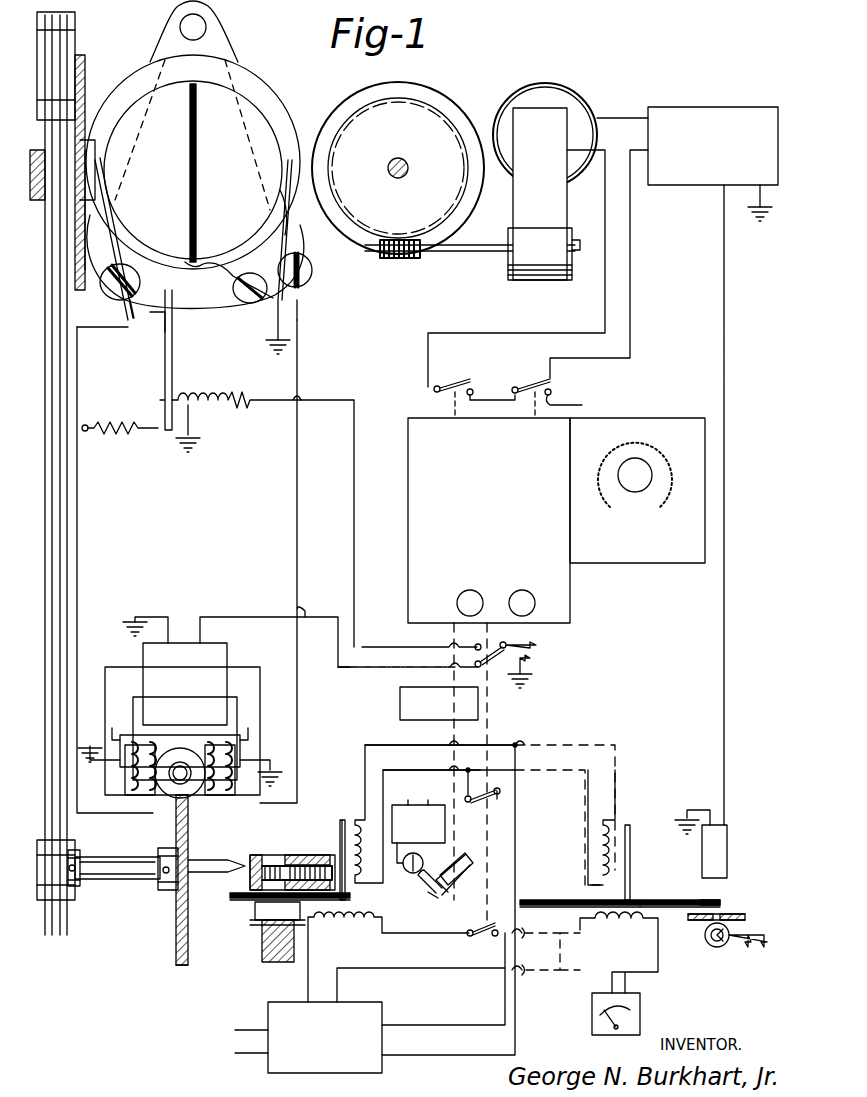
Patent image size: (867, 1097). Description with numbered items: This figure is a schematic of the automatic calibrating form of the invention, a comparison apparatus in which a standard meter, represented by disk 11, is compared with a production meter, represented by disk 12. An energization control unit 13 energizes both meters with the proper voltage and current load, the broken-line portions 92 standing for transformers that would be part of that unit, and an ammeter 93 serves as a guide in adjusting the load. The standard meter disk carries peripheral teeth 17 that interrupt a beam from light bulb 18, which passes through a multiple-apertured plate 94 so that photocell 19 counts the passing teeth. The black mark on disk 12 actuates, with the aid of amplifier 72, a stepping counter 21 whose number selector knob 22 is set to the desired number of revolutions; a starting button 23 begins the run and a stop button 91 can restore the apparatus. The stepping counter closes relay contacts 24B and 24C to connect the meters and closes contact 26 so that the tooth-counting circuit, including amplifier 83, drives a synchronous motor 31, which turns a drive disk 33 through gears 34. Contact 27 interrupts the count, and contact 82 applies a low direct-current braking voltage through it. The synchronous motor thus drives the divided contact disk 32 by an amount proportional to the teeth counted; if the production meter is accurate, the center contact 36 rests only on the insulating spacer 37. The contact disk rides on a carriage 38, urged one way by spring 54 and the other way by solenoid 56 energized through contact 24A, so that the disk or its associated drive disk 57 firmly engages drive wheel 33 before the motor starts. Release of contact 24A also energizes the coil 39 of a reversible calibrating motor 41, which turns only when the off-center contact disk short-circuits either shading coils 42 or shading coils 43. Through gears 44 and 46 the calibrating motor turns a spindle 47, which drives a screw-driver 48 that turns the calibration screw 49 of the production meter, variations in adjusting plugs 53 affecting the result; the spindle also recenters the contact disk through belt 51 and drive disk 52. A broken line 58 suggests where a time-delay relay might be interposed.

The belt 51 is at (46, 480).
The drive disk 52 is at (85, 82).
The drive disk 57 is at (265, 82).
The divided contact disk 32 is at (269, 120).
The insulating spacer 37 is at (196, 152).
The center contact 36 is at (232, 292).
The carriage 38 is at (302, 274).
The drive disk 33 is at (430, 88).
The gears 34 is at (395, 258).
The synchronous motor 31 is at (572, 112).
The amplifier 83 is at (742, 108).
The solenoid 56 is at (216, 386).
The spring 54 is at (130, 440).
The coil 39 is at (185, 643).
The calibrating motor 41 is at (231, 666).
The shading coils 42 is at (232, 760).
The shading coils 43 is at (128, 736).
The gears 44 is at (188, 798).
The gears 46 is at (188, 836).
The spindle 47 is at (106, 882).
The screw-driver 48 is at (191, 886).
The calibration screw 49 is at (246, 864).
The adjusting plugs 53 is at (336, 846).
The production meter disk 12 is at (374, 900).
The energization control unit 13 is at (380, 1072).
The relay contact 24C is at (465, 944).
The amplifier 72 is at (396, 720).
The broken line 58 is at (375, 677).
The relay contact 24A is at (491, 660).
The relay contact 24B is at (458, 810).
The broken-line portions 92 is at (563, 746).
The standard meter disk 11 is at (578, 898).
The peripheral teeth 17 is at (726, 904).
The multiple-apertured plate 94 is at (744, 914).
The light bulb 18 is at (710, 942).
The photocell 19 is at (728, 858).
The ammeter 93 is at (643, 1014).
The stepping counter 21 is at (571, 590).
The number selector knob 22 is at (620, 491).
The starting button 23 is at (457, 604).
The stop button 91 is at (535, 603).
The contact 26 is at (468, 380).
The contact 27 is at (536, 380).
The contact 82 is at (560, 402).